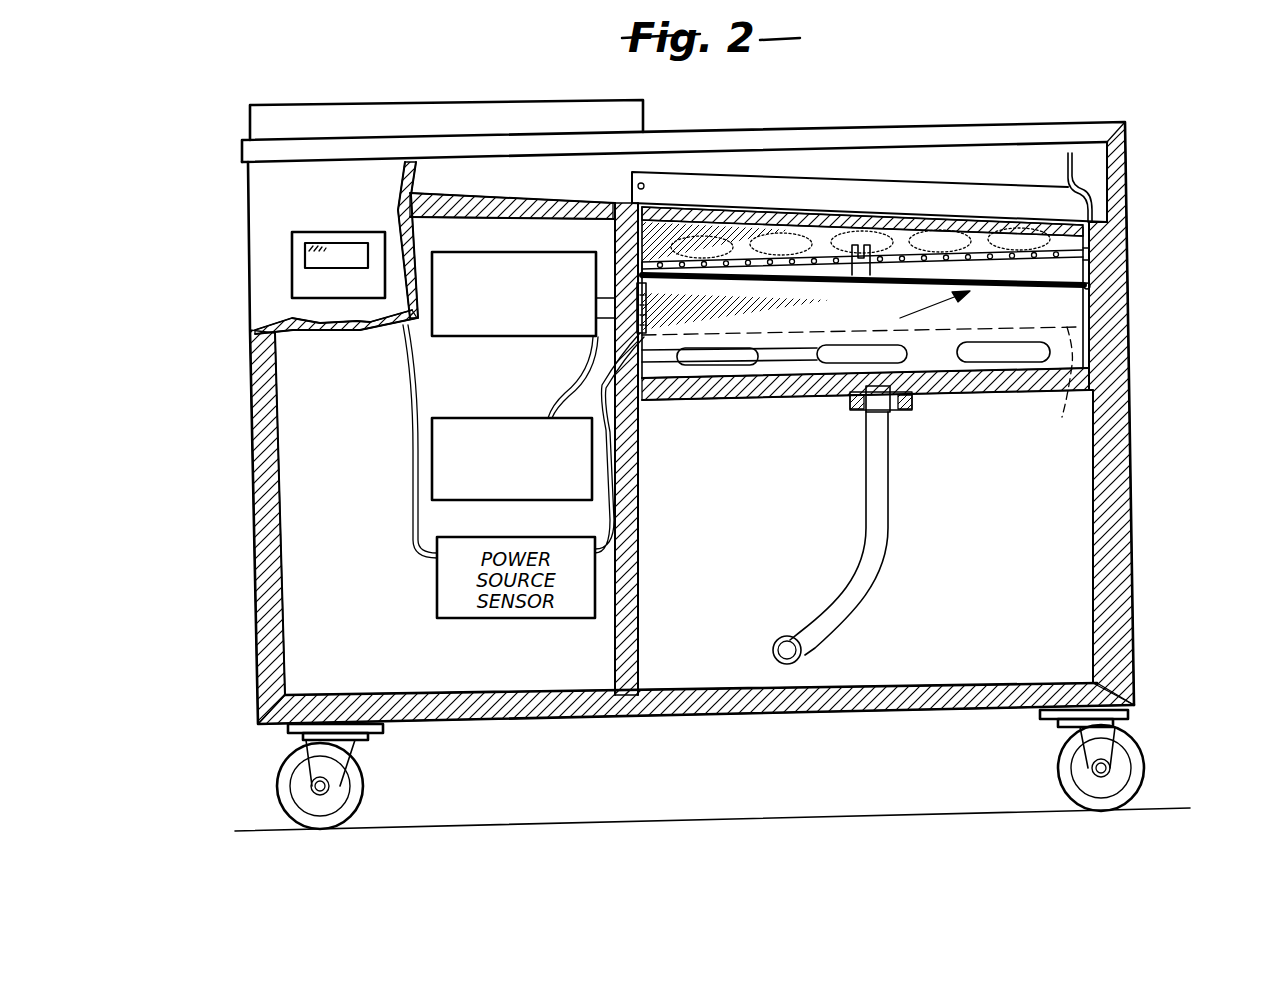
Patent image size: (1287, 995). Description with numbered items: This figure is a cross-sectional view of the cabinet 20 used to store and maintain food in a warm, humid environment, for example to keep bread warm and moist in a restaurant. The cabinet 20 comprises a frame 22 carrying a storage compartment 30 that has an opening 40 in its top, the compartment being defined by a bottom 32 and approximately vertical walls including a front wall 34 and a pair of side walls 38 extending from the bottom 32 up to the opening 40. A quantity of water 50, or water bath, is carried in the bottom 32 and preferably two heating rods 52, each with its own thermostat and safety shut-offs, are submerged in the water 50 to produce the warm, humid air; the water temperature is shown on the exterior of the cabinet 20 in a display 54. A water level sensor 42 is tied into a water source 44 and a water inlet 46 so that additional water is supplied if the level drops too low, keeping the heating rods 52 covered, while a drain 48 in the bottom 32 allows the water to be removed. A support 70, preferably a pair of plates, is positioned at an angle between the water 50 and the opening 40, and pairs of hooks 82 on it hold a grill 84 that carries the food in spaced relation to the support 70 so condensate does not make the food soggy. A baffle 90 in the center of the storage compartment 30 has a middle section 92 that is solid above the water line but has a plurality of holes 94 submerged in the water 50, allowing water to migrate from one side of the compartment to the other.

The cabinet 20 is at (1158, 179).
The frame 22 is at (246, 218).
The storage compartment 30 is at (787, 223).
The bottom 32 is at (827, 378).
The front wall 34 is at (1091, 284).
The side walls 38 is at (665, 214).
The opening 40 is at (828, 227).
The water level sensor 42 is at (487, 418).
The water source 44 is at (515, 338).
The water inlet 46 is at (630, 292).
The drain 48 is at (893, 417).
The water 50 is at (1061, 381).
The heating rods 52 is at (733, 360).
The display 54 is at (345, 297).
The support 70 is at (1085, 272).
The hooks 82 is at (870, 247).
The grill 84 is at (1090, 236).
The baffle 90 is at (919, 312).
The middle section 92 is at (1053, 320).
The holes 94 is at (715, 366).